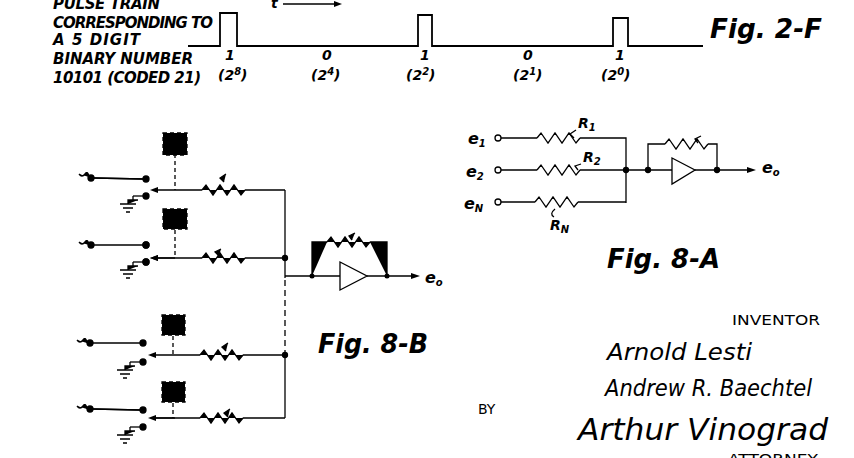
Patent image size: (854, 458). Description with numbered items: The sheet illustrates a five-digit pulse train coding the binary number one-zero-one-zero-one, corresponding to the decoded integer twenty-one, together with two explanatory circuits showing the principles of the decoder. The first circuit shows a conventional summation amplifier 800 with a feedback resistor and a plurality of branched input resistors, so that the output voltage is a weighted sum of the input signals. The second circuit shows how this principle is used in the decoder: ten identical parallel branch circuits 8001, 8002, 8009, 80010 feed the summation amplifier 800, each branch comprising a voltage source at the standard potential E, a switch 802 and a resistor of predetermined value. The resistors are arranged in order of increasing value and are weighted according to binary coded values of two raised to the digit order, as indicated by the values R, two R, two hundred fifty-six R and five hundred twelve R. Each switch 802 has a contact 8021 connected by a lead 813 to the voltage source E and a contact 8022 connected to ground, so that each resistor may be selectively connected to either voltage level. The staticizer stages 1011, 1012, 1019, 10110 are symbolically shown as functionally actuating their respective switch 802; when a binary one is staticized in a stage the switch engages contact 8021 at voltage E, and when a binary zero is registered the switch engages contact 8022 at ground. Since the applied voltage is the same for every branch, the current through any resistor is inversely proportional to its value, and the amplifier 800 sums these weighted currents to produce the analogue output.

In FIG. 8B, the summation amplifier 800 is at (350, 291).
In FIG. 8A, the summation amplifier 800 is at (676, 185).
In FIG. 8B, the first parallel branch circuit 8001 is at (105, 145).
In FIG. 8B, the second parallel branch circuit 8002 is at (105, 223).
In FIG. 8B, the ninth parallel branch circuit 8009 is at (108, 323).
In FIG. 8B, the tenth parallel branch circuit 80010 is at (110, 394).
In FIG. 8B, the first staticizer stage 1011 is at (201, 127).
In FIG. 8B, the second staticizer stage 1012 is at (187, 209).
In FIG. 8B, the ninth staticizer stage 1019 is at (185, 321).
In FIG. 8B, the tenth staticizer stage 10110 is at (185, 382).
In FIG. 8B, the lead 813 is at (136, 159).
In FIG. 8B, the switch 802 is at (170, 259).
In FIG. 8B, the first switch contact 8021 is at (144, 243).
In FIG. 8B, the second switch contact 8022 is at (142, 268).